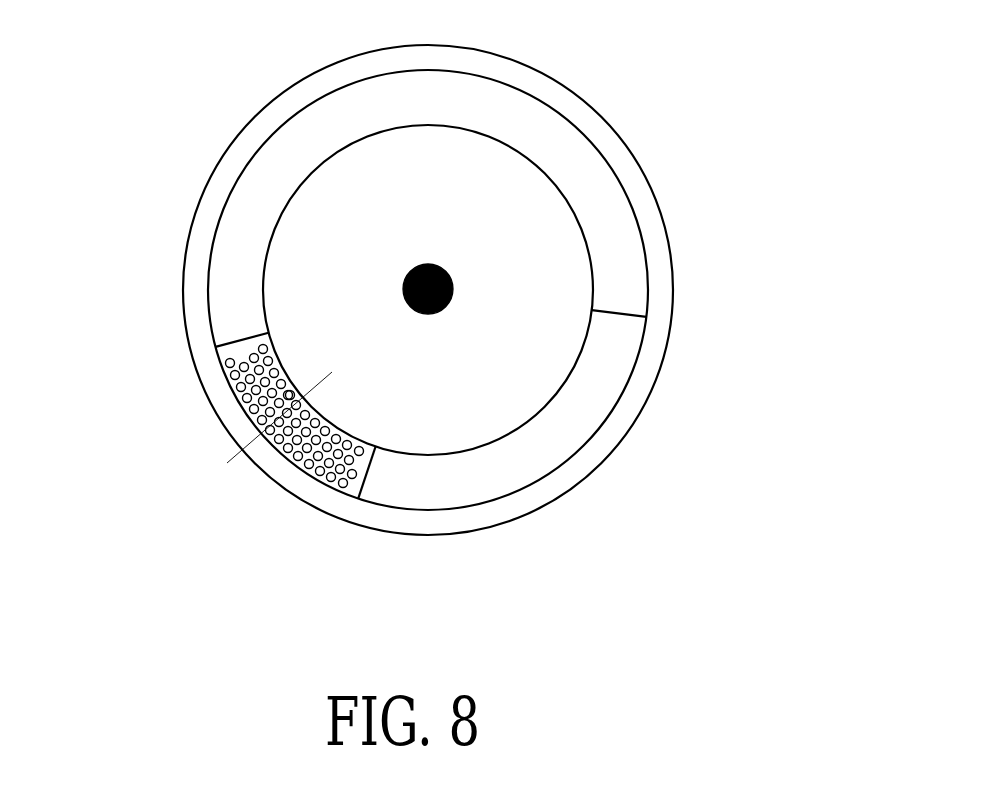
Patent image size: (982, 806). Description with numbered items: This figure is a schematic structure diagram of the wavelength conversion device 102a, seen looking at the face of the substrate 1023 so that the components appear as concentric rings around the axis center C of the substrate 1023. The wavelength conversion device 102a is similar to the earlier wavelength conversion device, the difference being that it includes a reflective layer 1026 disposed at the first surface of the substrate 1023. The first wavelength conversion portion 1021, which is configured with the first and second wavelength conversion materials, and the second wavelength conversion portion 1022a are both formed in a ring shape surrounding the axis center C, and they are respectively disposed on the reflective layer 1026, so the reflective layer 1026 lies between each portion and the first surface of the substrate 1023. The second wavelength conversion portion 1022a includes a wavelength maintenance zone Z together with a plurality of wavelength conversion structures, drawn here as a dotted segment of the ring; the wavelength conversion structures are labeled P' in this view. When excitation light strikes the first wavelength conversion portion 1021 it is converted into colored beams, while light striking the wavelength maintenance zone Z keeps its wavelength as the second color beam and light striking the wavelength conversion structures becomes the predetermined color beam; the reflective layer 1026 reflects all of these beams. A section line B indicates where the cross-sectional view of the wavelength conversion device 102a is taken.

The wavelength conversion device 102a is at (160, 89).
The first wavelength conversion portion 1021 is at (277, 158).
The second wavelength conversion portion 1022a is at (227, 355).
The substrate 1023 is at (632, 175).
The reflective layer 1026 is at (547, 265).
The axis center C is at (432, 265).
The wavelength maintenance zone Z is at (332, 480).
The line B- B is at (350, 400).
The dot pattern point P' is at (211, 374).